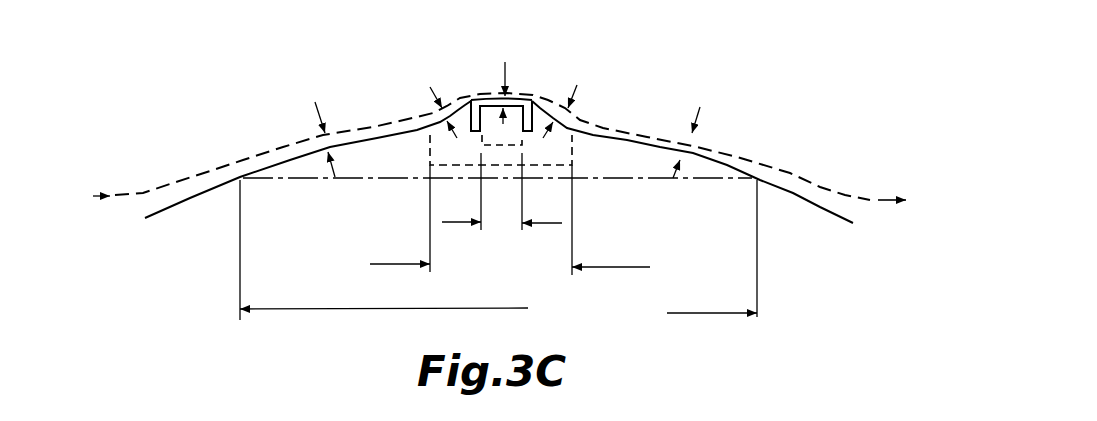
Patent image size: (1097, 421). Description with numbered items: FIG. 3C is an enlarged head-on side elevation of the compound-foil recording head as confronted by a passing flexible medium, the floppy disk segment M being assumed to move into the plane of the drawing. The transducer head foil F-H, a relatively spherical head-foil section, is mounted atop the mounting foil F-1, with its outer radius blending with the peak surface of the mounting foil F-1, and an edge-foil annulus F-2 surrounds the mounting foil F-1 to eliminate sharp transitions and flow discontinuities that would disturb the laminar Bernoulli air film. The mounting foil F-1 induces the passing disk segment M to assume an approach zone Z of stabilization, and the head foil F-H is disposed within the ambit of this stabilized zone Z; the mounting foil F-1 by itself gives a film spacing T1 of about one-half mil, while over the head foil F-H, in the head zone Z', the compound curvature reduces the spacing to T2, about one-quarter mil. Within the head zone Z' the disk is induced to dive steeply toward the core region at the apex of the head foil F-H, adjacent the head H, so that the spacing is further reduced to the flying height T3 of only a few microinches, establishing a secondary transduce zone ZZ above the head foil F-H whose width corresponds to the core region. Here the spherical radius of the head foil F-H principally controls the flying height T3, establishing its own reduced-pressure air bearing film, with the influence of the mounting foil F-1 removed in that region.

The approach zone of stabilization Z is at (498, 252).
The head H is at (516, 104).
The floppy disk segment M is at (138, 172).
The mounting foil F-1 is at (702, 166).
The edge foil annulus F-2 is at (190, 202).
The head foil F-H is at (565, 128).
The spacing over mounting foil T1 is at (518, 129).
The spacing over head foil T2 is at (510, 98).
The flying height over core region T3 is at (516, 83).
The transduce zone width ZZ is at (502, 194).
The head zone Z' is at (510, 222).